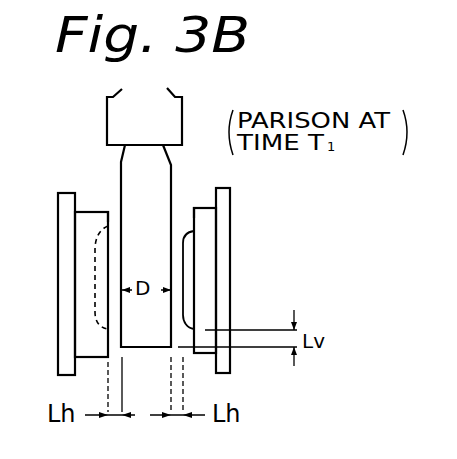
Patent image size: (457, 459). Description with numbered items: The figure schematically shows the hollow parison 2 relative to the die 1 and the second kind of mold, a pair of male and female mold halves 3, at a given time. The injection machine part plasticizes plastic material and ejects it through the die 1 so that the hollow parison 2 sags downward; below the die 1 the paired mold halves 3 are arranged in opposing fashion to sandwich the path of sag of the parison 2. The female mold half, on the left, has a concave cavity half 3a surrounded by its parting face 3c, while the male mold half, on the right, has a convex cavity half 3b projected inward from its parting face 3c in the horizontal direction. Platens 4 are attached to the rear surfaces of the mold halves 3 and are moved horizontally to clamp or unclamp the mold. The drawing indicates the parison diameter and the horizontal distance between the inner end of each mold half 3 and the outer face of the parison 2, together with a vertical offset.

The die 1 is at (172, 107).
The hollow parison 2 is at (167, 161).
The mold halves 3 is at (82, 228).
The concave cavity half 3a is at (86, 258).
The convex cavity half 3b is at (183, 285).
The parting faces 3c is at (109, 236).
The platens 4 is at (65, 307).